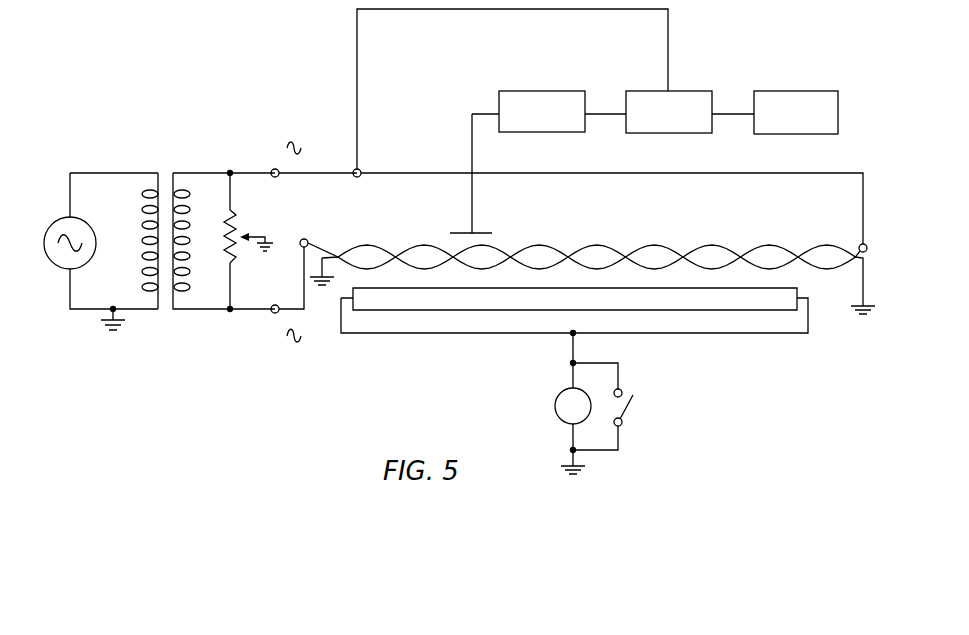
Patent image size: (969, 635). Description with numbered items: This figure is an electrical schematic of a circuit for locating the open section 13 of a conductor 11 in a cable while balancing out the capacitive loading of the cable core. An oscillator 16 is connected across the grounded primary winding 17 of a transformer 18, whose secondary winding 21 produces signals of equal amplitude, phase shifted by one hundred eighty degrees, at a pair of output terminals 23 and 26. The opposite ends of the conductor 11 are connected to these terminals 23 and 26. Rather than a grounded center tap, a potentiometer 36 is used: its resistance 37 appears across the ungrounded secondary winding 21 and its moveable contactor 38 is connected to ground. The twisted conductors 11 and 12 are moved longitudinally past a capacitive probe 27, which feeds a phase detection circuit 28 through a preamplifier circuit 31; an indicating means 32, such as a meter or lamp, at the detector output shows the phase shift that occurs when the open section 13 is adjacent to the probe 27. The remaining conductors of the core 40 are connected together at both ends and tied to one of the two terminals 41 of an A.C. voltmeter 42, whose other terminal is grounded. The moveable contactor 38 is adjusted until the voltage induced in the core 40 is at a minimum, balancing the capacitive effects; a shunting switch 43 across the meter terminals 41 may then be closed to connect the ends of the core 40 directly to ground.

The conductor 11 is at (322, 246).
The twisted conductor 12 is at (367, 244).
The open section 13 is at (583, 250).
The oscillator 16 is at (60, 264).
The primary winding 17 is at (141, 258).
The transformer 18 is at (168, 170).
The secondary winding 21 is at (188, 222).
The output terminal 23 is at (277, 178).
The output terminal 26 is at (273, 315).
The capacitive probe 27 is at (488, 232).
The phase detection circuit 28 is at (679, 90).
The preamplifier circuit 31 is at (549, 90).
The indicating means 32 is at (799, 90).
The potentiometer 36 is at (236, 253).
The resistance 37 is at (227, 248).
The moveable contactor 38 is at (265, 235).
The core 40 is at (545, 290).
The terminals 41 is at (571, 363).
The A.C. voltmeter 42 is at (555, 409).
The shunting switch 43 is at (633, 403).